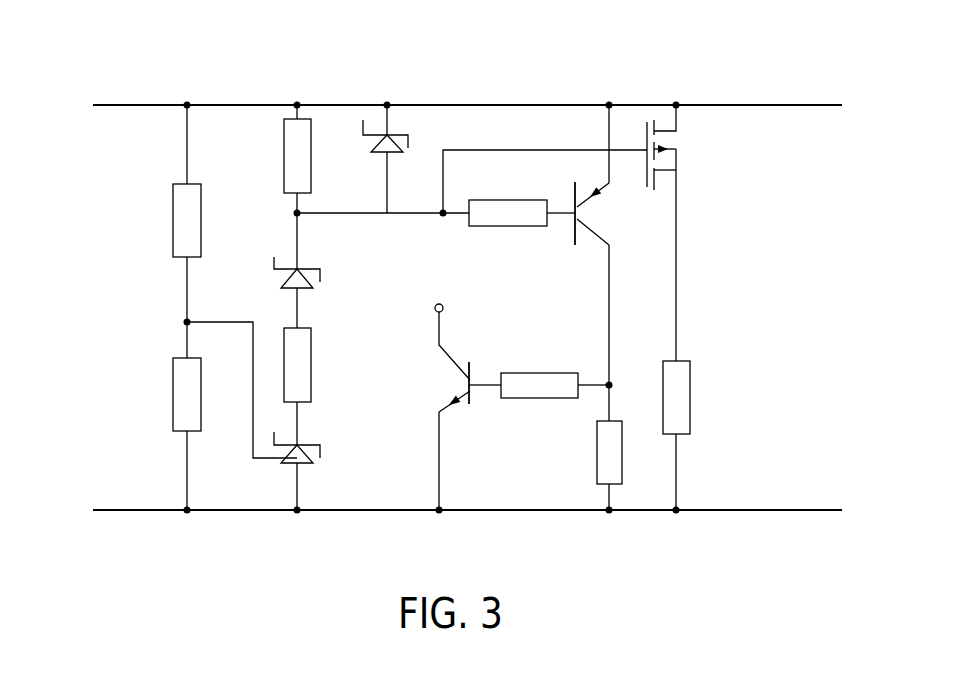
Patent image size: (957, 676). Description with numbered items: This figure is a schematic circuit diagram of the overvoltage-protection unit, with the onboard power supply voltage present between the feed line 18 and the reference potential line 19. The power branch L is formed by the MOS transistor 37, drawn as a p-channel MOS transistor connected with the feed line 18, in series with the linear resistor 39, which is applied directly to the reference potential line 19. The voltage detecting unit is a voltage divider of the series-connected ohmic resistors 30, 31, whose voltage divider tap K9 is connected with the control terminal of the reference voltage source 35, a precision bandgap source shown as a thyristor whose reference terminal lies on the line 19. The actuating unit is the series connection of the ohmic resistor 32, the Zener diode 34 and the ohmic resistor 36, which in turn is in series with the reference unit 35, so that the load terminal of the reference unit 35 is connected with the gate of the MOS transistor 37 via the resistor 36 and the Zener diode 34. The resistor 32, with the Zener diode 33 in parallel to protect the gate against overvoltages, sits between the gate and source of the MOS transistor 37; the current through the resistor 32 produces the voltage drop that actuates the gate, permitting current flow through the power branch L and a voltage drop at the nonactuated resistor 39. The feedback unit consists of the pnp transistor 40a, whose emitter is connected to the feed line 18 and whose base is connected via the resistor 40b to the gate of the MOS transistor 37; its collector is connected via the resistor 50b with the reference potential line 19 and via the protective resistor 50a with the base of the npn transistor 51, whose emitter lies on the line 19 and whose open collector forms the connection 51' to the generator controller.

The feed line 18 is at (152, 104).
The reference potential line 19 is at (157, 513).
The ohmic resistor 30 is at (180, 242).
The ohmic resistor 31 is at (185, 377).
The voltage divider tap K9 is at (221, 379).
The ohmic resistor 32 is at (290, 182).
The Zener diode 33 is at (397, 153).
The Zener diode 34 is at (305, 289).
The reference voltage source 35 is at (313, 455).
The ohmic resistor 36 is at (305, 395).
The MOS transistor 37 is at (663, 161).
The linear resistor 39 is at (683, 402).
The power branch L is at (677, 302).
The pnp transistor 40a is at (587, 212).
The resistor 40b is at (500, 210).
The resistor 50a is at (557, 380).
The resistor 50b is at (607, 472).
The npn transistor 51 is at (449, 411).
The connection 51' is at (454, 287).